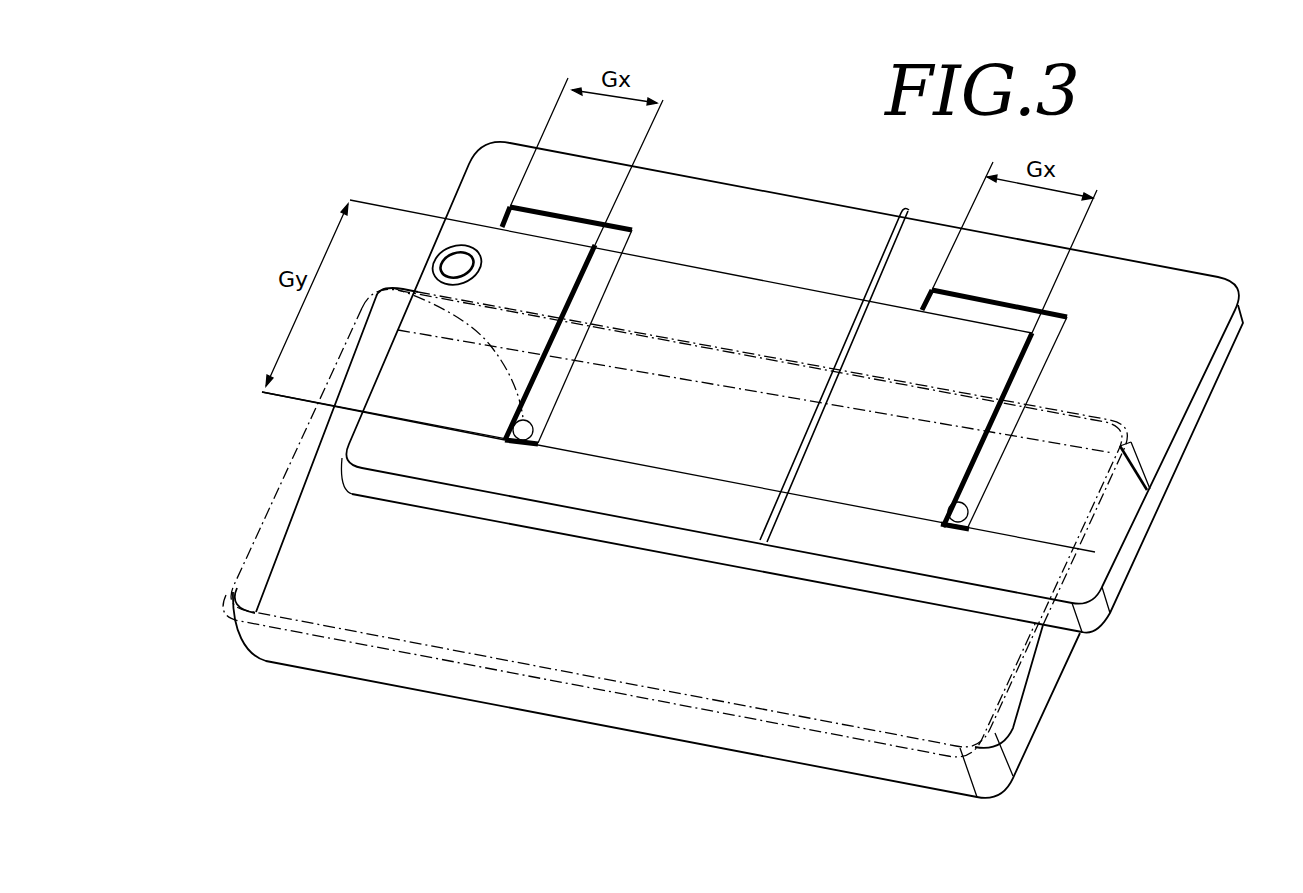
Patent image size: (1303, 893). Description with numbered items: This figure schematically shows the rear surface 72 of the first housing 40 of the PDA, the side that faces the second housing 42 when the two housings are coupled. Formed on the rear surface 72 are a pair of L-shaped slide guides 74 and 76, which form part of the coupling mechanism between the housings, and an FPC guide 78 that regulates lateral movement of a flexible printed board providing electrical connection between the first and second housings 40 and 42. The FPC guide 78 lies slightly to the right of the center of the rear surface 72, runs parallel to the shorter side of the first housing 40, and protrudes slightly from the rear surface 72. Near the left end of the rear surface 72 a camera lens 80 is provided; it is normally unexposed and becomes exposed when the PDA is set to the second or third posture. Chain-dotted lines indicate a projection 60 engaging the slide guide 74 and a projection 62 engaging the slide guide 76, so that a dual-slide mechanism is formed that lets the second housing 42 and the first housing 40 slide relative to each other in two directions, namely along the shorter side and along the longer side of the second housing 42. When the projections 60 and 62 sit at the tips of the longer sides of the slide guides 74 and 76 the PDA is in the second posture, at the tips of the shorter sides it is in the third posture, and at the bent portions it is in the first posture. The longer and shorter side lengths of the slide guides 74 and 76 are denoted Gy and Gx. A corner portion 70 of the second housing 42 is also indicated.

The first housing 40 is at (1212, 408).
The second housing 42 is at (1047, 708).
The projection 60 is at (961, 501).
The projection 62 is at (397, 289).
The corner portion 70 is at (943, 721).
The rear surface 72 is at (1213, 290).
The slide guide 74 is at (1008, 295).
The slide guide 76 is at (592, 216).
The FPC guide 78 is at (891, 234).
The camera lens 80 is at (441, 252).